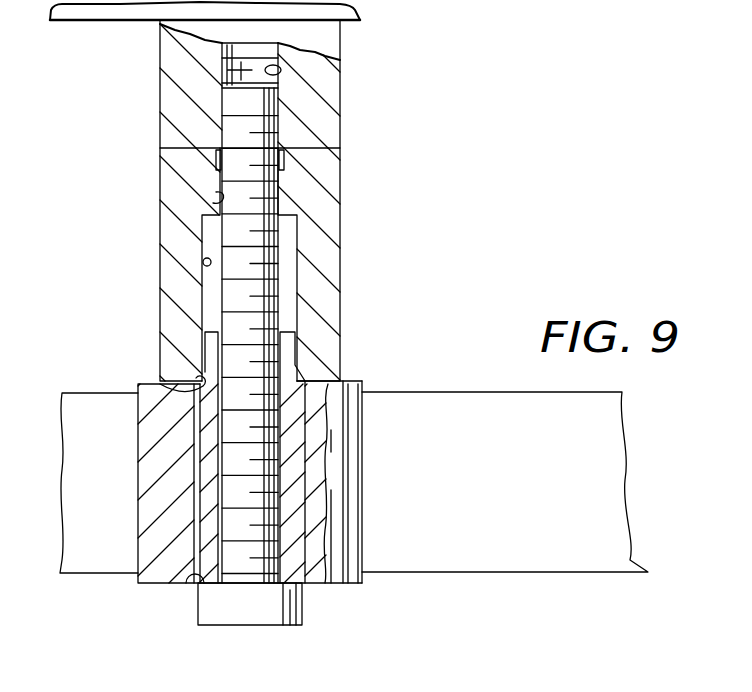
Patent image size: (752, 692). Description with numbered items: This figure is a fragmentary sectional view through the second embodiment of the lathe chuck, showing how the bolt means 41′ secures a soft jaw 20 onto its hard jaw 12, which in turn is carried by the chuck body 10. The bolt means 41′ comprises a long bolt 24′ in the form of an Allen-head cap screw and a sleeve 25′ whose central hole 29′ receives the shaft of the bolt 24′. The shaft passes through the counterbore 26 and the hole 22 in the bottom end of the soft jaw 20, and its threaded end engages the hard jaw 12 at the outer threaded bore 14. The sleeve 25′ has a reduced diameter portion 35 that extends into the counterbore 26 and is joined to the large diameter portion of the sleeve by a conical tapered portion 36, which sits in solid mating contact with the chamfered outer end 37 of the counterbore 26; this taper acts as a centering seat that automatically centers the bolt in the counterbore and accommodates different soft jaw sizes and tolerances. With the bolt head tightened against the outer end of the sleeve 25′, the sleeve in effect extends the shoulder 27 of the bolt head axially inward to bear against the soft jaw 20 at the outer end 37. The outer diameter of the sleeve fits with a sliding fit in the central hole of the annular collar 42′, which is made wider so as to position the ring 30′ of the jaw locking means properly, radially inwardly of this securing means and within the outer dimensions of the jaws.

The chuck body 10 is at (137, 21).
The hard jaw 12 is at (325, 128).
The outer threaded bore 14 is at (281, 73).
The soft jaw 20 is at (341, 214).
The counterbored hole 22 is at (213, 203).
The counterbore 26 is at (204, 264).
The central hole 29′ is at (282, 560).
The reduced diameter portion 35 is at (287, 341).
The conical tapered portion 36 is at (298, 372).
The chamfered outer end 37 is at (170, 387).
The annular collar 42′ is at (345, 428).
The ring 30′ is at (603, 438).
The sleeve 25′ is at (205, 523).
The shoulder 27 is at (196, 588).
The bolt means 41′ is at (191, 638).
The long bolt 24′ is at (286, 606).